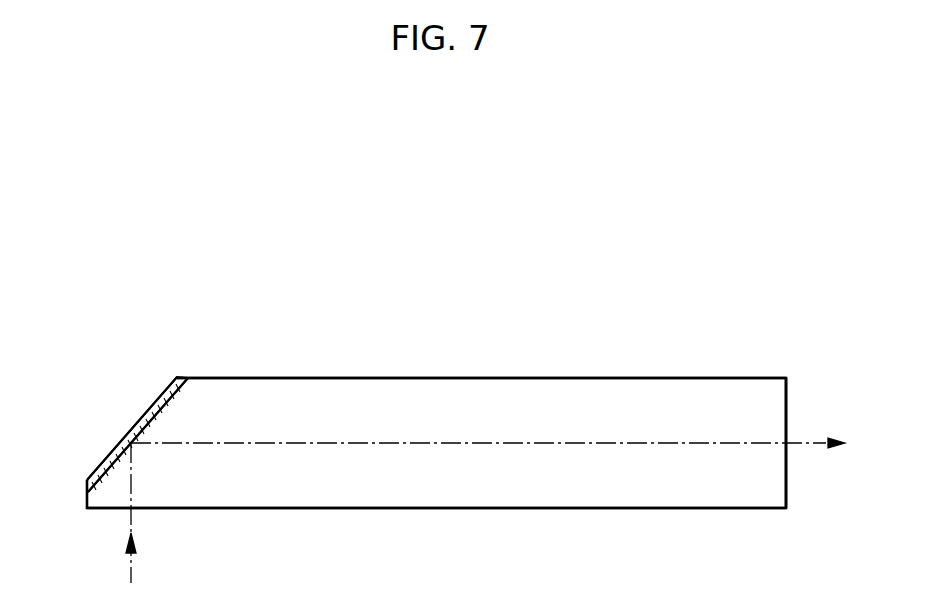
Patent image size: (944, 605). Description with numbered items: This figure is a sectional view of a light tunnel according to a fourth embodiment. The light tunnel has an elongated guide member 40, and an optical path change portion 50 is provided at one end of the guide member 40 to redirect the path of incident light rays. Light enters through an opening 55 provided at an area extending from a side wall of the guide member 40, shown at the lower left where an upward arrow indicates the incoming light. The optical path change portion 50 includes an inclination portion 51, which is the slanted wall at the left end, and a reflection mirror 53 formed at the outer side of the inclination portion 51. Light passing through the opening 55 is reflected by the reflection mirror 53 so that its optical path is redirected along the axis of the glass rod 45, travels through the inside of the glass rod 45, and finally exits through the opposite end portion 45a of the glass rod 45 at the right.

The guide member 40 is at (522, 360).
The glass rod 45 is at (375, 377).
The opposite end portion 45a is at (786, 468).
The optical path change portion 50 is at (177, 363).
The inclination portion 51 is at (108, 468).
The reflection mirror 53 is at (140, 423).
The opening 55 is at (115, 509).